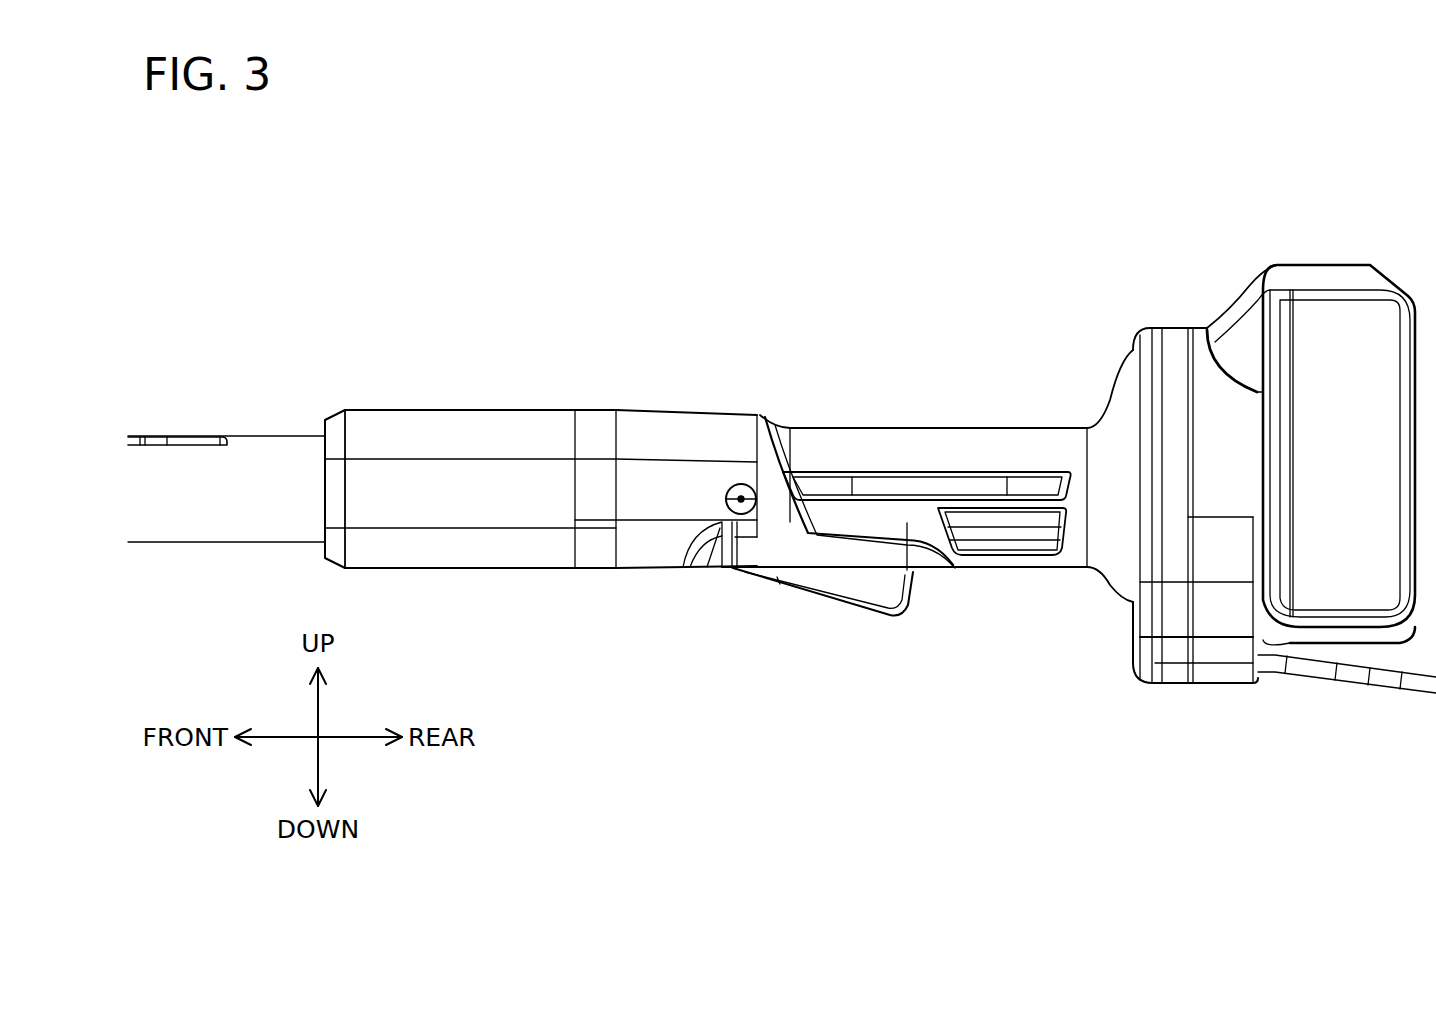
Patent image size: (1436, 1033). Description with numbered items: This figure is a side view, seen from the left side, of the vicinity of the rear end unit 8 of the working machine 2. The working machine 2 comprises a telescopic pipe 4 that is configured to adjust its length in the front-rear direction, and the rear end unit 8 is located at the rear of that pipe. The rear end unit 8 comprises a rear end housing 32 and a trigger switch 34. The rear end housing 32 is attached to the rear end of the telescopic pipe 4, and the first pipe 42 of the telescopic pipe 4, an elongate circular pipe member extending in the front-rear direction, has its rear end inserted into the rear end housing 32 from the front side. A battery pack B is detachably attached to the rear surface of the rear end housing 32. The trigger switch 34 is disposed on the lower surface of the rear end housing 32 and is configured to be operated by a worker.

The working machine 2 is at (298, 218).
The telescopic pipe 4 is at (220, 367).
The rear end unit 8 is at (713, 356).
The rear end housing 32 is at (462, 428).
The trigger switch 34 is at (862, 587).
The first pipe 42 is at (210, 528).
The battery pack B is at (1338, 340).